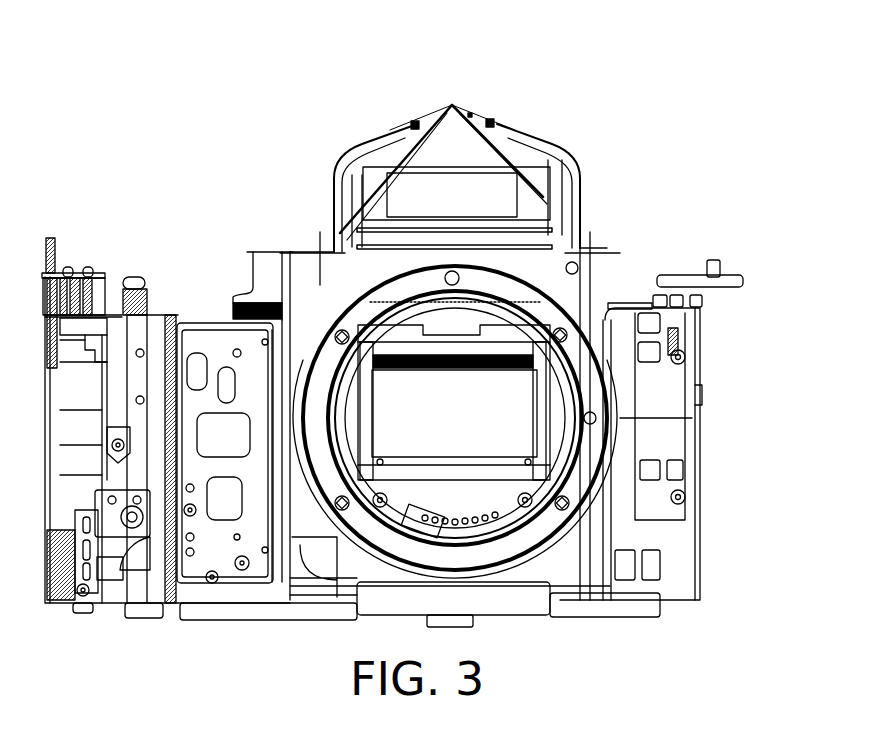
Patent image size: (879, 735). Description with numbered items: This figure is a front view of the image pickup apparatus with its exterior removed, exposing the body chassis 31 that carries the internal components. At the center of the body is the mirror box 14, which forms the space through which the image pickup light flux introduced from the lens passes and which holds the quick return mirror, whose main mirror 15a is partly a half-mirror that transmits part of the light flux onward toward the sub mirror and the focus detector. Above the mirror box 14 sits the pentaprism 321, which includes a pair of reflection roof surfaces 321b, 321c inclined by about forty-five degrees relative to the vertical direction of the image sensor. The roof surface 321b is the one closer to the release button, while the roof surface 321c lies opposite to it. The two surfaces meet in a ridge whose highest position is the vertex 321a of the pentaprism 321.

The pentaprism 321 is at (443, 137).
The vertex of the pentaprism 321a is at (457, 100).
The reflection roof surface 321b is at (387, 130).
The reflection roof surface 321c is at (523, 133).
The body chassis 31 is at (673, 318).
The mirror box 14 is at (610, 430).
The main mirror 15a is at (580, 462).